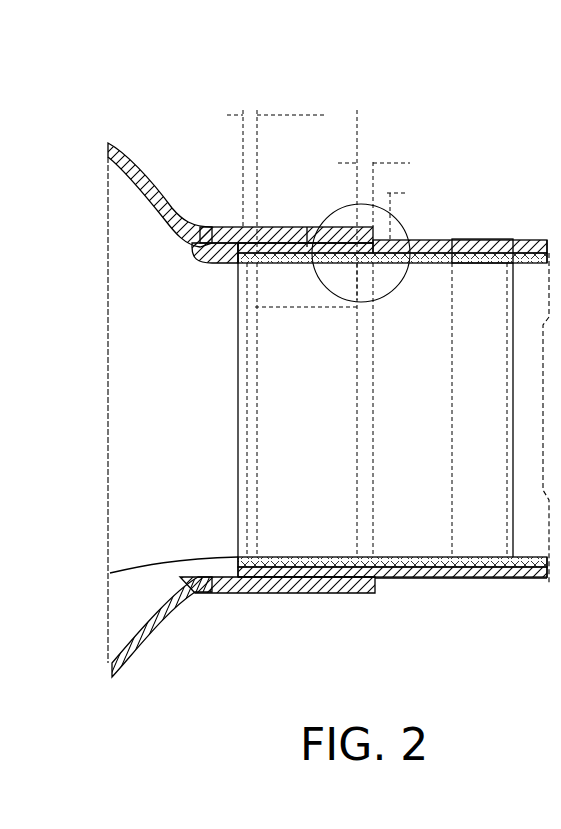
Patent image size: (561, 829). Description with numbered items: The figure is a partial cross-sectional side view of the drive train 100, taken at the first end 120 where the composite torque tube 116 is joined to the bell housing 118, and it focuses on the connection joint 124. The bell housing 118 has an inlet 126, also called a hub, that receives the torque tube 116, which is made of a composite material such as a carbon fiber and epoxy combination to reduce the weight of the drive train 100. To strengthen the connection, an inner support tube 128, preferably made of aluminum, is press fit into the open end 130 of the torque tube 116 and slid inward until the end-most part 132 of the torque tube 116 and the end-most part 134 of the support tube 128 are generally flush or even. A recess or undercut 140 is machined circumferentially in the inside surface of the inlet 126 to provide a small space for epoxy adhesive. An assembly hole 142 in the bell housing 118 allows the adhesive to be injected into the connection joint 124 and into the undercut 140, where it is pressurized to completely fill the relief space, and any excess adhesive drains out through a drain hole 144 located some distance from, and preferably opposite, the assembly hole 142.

The drive train 100 is at (193, 118).
The torque tube 116 is at (497, 584).
The bell housing 118 is at (134, 150).
The first end 120 is at (420, 240).
The connection joint 124 is at (282, 251).
The inlet 126 is at (353, 598).
The inner support tube 128 is at (476, 267).
The open end 130 is at (238, 383).
The end-most part of composite tube 132 is at (110, 573).
The end-most part of support tube 134 is at (232, 553).
The undercut 140 is at (194, 250).
The assembly hole 142 is at (306, 221).
The drain hole 144 is at (308, 599).